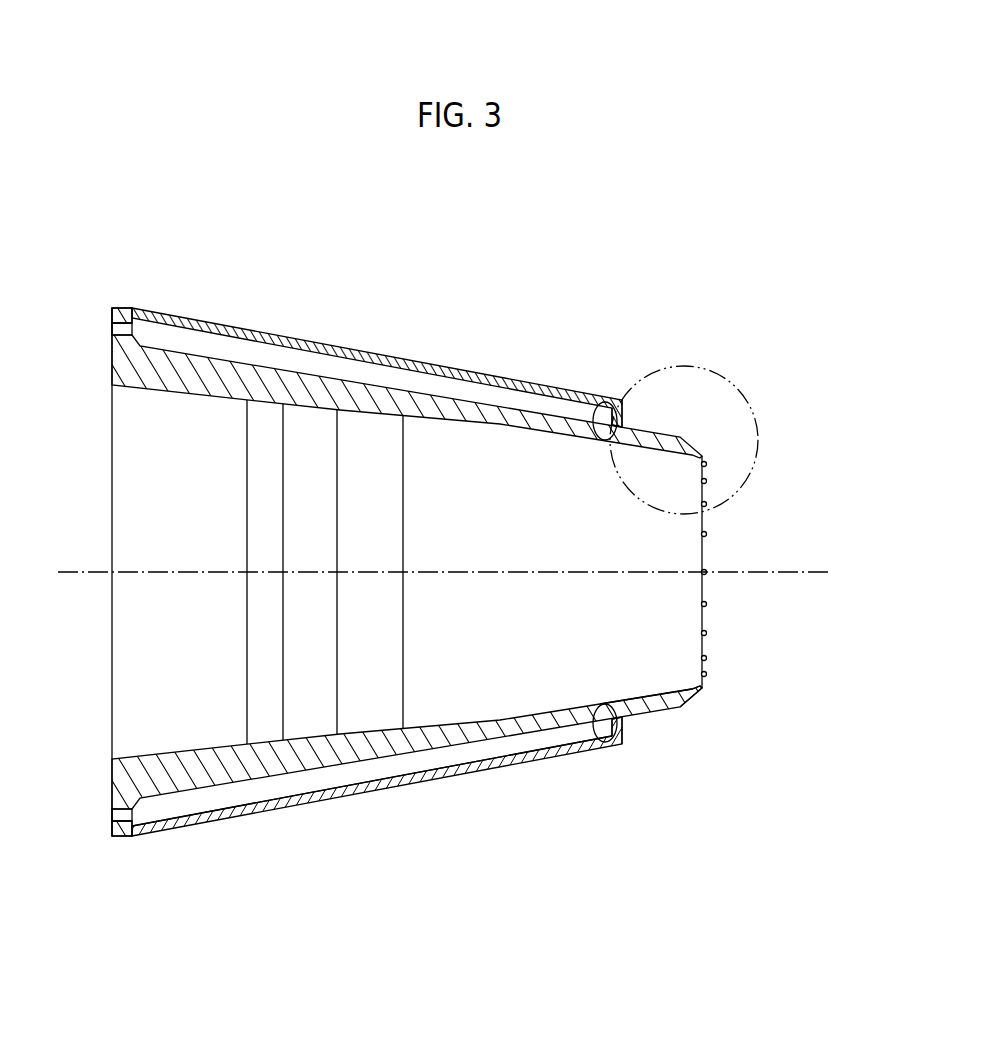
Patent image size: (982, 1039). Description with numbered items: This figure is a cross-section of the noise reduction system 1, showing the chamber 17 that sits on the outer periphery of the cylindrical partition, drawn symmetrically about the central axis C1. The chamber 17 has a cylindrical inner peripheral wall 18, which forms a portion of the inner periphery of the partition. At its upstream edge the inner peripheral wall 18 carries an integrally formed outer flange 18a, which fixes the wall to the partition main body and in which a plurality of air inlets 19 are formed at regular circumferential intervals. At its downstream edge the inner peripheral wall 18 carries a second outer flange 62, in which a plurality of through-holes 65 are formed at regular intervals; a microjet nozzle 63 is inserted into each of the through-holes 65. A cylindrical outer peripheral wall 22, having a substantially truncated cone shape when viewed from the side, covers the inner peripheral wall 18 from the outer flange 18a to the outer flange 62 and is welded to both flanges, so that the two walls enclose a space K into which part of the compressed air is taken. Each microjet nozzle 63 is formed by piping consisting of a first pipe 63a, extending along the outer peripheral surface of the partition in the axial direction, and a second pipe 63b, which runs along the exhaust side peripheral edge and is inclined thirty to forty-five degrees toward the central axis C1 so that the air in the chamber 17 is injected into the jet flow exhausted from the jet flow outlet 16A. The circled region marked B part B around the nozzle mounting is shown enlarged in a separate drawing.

The noise reduction system 1 is at (692, 860).
The jet flow outlet 16A is at (688, 589).
The chamber 17 is at (439, 352).
The inner peripheral wall 18 is at (332, 386).
The outer flange 18a is at (118, 308).
The air inlets 19 is at (126, 329).
The outer peripheral wall 22 is at (462, 774).
The outer flange 62 is at (625, 411).
The microjet nozzles 63 is at (704, 571).
The first pipe 63a is at (648, 707).
The second pipe 63b is at (695, 684).
The through-holes 65 is at (609, 404).
The B part B is at (735, 382).
The central axis C1 is at (750, 572).
The space K is at (370, 772).